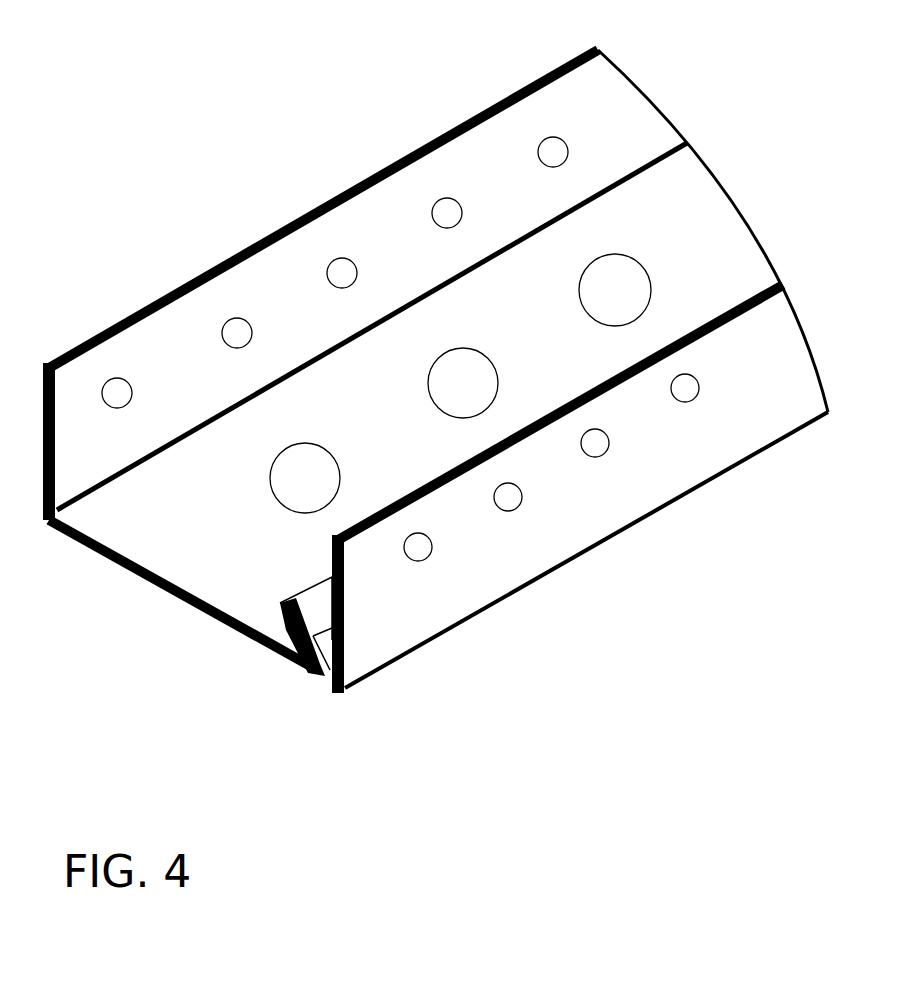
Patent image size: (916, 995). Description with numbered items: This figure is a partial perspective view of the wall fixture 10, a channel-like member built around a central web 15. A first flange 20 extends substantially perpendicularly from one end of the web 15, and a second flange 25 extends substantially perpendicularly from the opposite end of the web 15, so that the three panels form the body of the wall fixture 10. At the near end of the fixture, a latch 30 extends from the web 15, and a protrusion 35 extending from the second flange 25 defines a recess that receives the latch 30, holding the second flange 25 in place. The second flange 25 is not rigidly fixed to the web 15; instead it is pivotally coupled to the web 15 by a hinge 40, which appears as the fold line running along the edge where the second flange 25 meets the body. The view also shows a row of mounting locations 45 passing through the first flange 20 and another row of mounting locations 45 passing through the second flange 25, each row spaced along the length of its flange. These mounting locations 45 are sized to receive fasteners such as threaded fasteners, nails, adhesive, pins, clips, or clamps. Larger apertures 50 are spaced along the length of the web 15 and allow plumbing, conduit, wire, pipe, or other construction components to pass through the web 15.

The wall fixture 10 is at (728, 98).
The web 15 is at (178, 515).
The first flange 20 is at (342, 227).
The second flange 25 is at (763, 378).
The latch 30 is at (303, 673).
The protrusion 35 is at (328, 606).
The hinge 40 is at (342, 693).
The mounting locations 45 is at (117, 393).
The apertures 50 is at (613, 287).